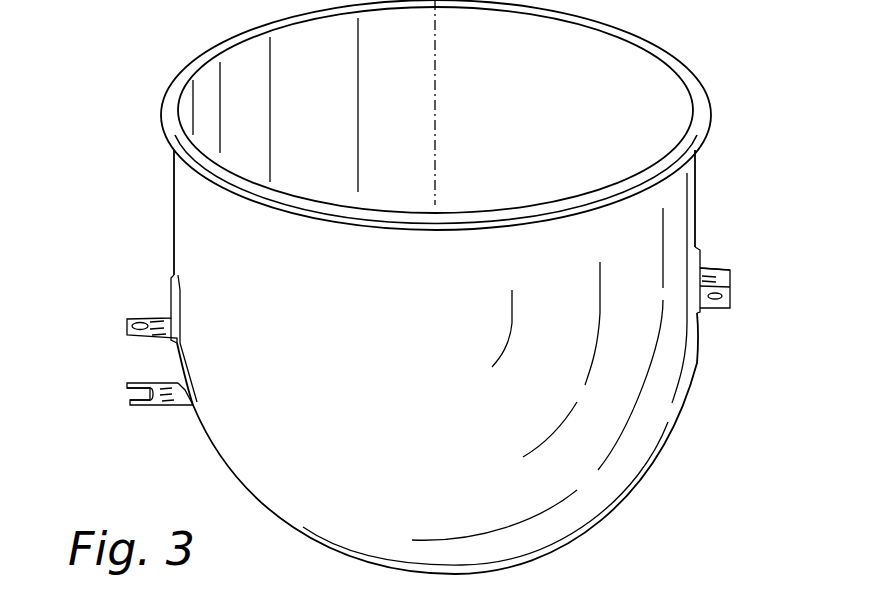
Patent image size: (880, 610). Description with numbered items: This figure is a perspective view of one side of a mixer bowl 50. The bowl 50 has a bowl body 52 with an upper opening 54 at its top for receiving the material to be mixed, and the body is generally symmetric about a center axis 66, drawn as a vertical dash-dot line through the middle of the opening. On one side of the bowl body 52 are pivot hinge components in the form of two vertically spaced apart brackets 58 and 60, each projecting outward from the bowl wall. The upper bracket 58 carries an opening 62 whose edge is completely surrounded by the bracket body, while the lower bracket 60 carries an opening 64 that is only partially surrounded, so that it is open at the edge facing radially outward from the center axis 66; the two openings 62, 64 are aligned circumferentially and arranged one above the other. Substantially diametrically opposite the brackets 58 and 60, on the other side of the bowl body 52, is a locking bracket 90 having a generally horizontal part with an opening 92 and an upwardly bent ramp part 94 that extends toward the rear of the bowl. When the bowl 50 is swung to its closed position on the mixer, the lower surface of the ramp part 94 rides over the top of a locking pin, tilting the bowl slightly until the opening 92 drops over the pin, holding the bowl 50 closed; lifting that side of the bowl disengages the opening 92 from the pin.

The bowl 50 is at (145, 56).
The bowl body 52 is at (578, 475).
The upper opening 54 is at (598, 107).
The bracket 58 is at (130, 337).
The bracket 60 is at (163, 407).
The opening 62 is at (141, 320).
The opening 64 is at (120, 392).
The center axis 66 is at (435, 87).
The locking bracket 90 is at (712, 308).
The opening 92 is at (732, 297).
The ramp part 94 is at (723, 272).